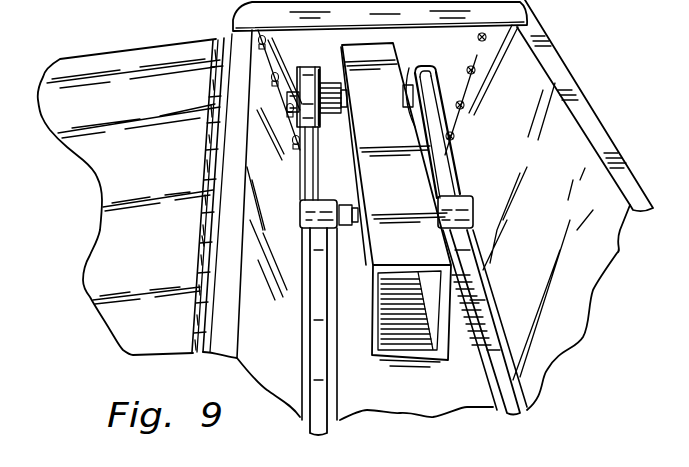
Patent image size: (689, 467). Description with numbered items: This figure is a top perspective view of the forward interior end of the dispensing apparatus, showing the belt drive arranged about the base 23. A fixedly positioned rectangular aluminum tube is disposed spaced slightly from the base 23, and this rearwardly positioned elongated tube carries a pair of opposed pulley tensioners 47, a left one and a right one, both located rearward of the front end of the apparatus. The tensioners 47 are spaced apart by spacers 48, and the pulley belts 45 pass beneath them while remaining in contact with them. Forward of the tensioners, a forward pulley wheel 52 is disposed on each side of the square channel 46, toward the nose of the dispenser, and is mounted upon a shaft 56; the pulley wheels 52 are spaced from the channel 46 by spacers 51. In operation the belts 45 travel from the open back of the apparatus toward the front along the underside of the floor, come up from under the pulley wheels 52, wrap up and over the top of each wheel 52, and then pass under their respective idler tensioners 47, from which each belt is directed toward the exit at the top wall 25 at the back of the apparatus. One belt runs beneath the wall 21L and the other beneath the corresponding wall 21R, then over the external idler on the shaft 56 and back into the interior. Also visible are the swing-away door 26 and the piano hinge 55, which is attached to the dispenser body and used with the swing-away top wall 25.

The wall 21L is at (293, 353).
The right floor panel 21R is at (577, 193).
The base 23 is at (414, 394).
The top wall 25 is at (212, 147).
The door 26 is at (117, 165).
The pulley belts 45 is at (323, 300).
The square channel 46 is at (438, 247).
The pulley tensioners 47 is at (318, 202).
The spacers 48 is at (352, 203).
The spacers 51 is at (337, 80).
The forward pulley wheel 52 is at (319, 77).
The piano hinge 55 is at (202, 240).
The shaft 56 is at (287, 98).